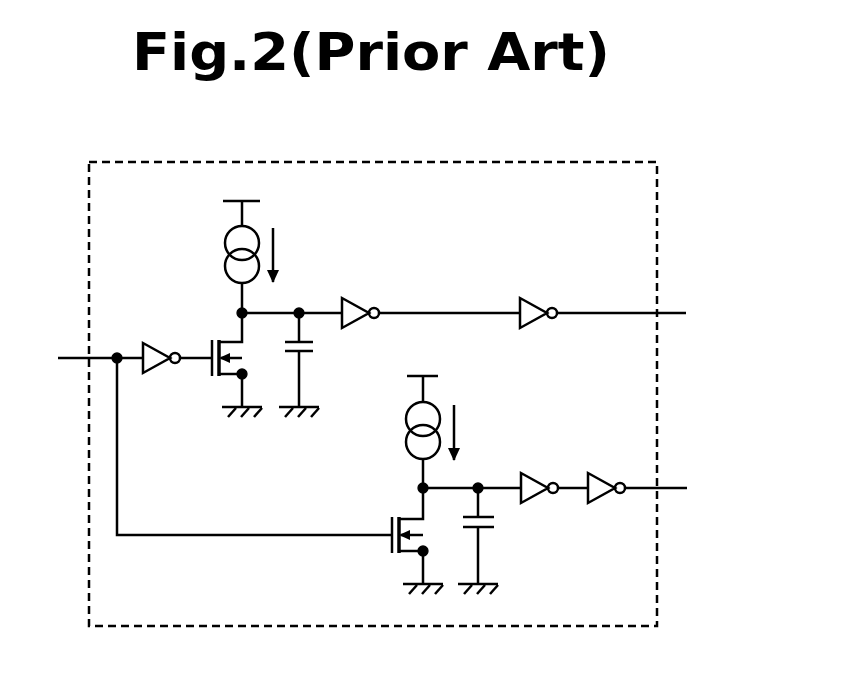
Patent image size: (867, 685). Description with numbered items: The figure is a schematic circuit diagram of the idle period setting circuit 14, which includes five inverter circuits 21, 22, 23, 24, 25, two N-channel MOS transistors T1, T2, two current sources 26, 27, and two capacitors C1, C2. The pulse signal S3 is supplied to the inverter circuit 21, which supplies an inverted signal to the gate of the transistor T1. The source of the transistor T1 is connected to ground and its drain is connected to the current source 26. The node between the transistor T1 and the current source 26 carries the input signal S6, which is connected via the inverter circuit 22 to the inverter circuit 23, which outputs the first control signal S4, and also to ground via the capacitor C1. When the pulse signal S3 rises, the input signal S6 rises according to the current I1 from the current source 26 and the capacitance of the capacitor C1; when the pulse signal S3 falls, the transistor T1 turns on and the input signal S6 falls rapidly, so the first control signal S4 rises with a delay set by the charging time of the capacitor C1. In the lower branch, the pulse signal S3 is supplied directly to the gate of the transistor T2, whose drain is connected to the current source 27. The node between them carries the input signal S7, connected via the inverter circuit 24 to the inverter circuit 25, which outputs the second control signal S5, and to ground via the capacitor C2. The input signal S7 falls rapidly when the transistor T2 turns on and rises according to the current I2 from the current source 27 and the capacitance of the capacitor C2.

The idle period setting circuit 14 is at (657, 205).
The inverter circuit 21 is at (143, 344).
The inverter circuit 22 is at (361, 298).
The inverter circuit 23 is at (533, 298).
The inverter circuit 24 is at (534, 472).
The inverter circuit 25 is at (601, 472).
The current source 26 is at (235, 257).
The current source 27 is at (414, 432).
The N-channel MOS transistor T1 is at (212, 341).
The N-channel MOS transistor T2 is at (395, 515).
The capacitor C1 is at (310, 353).
The capacitor C2 is at (488, 528).
The current I1 is at (287, 255).
The current I2 is at (467, 433).
The pulse signal S3 is at (81, 360).
The first control signal S4 is at (640, 312).
The second control signal S5 is at (674, 488).
The input signal S6 is at (292, 297).
The input signal S7 is at (472, 472).